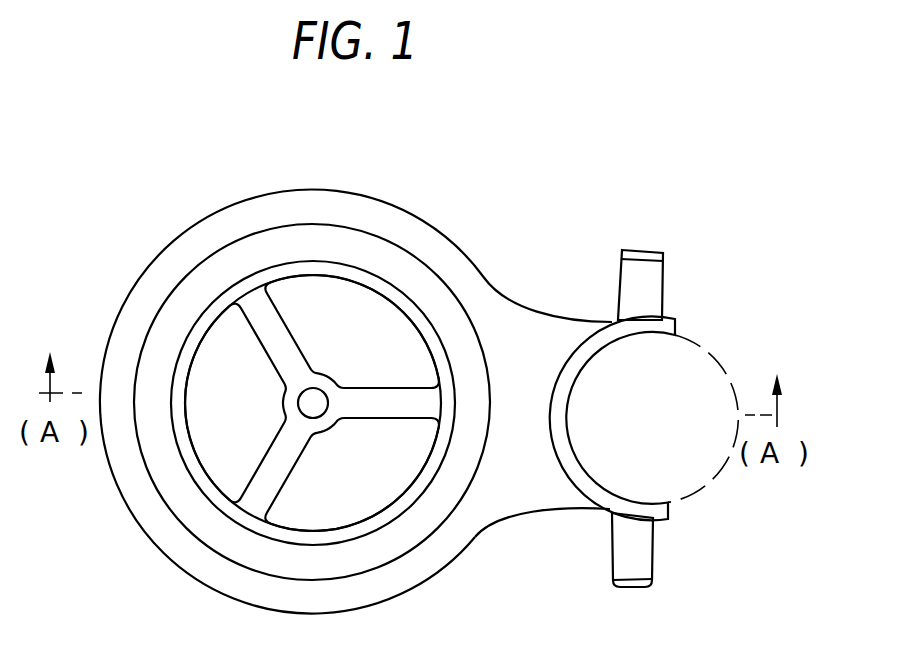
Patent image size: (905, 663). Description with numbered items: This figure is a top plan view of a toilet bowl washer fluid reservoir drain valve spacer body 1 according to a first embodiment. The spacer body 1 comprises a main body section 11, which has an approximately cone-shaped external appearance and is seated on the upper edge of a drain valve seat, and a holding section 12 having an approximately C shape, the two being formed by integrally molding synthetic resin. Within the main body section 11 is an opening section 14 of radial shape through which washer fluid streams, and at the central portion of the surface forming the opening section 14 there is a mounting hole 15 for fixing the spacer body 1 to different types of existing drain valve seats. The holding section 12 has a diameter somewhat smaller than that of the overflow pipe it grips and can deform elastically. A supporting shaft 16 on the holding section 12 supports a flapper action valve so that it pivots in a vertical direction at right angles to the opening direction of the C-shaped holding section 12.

The toilet bowl washer fluid reservoir drain valve spacer body 1 is at (132, 227).
The main body section 11 is at (351, 192).
The holding section 12 is at (673, 318).
The opening section 14 is at (220, 462).
The mounting hole 15 is at (317, 408).
The supporting shaft 16 is at (622, 296).